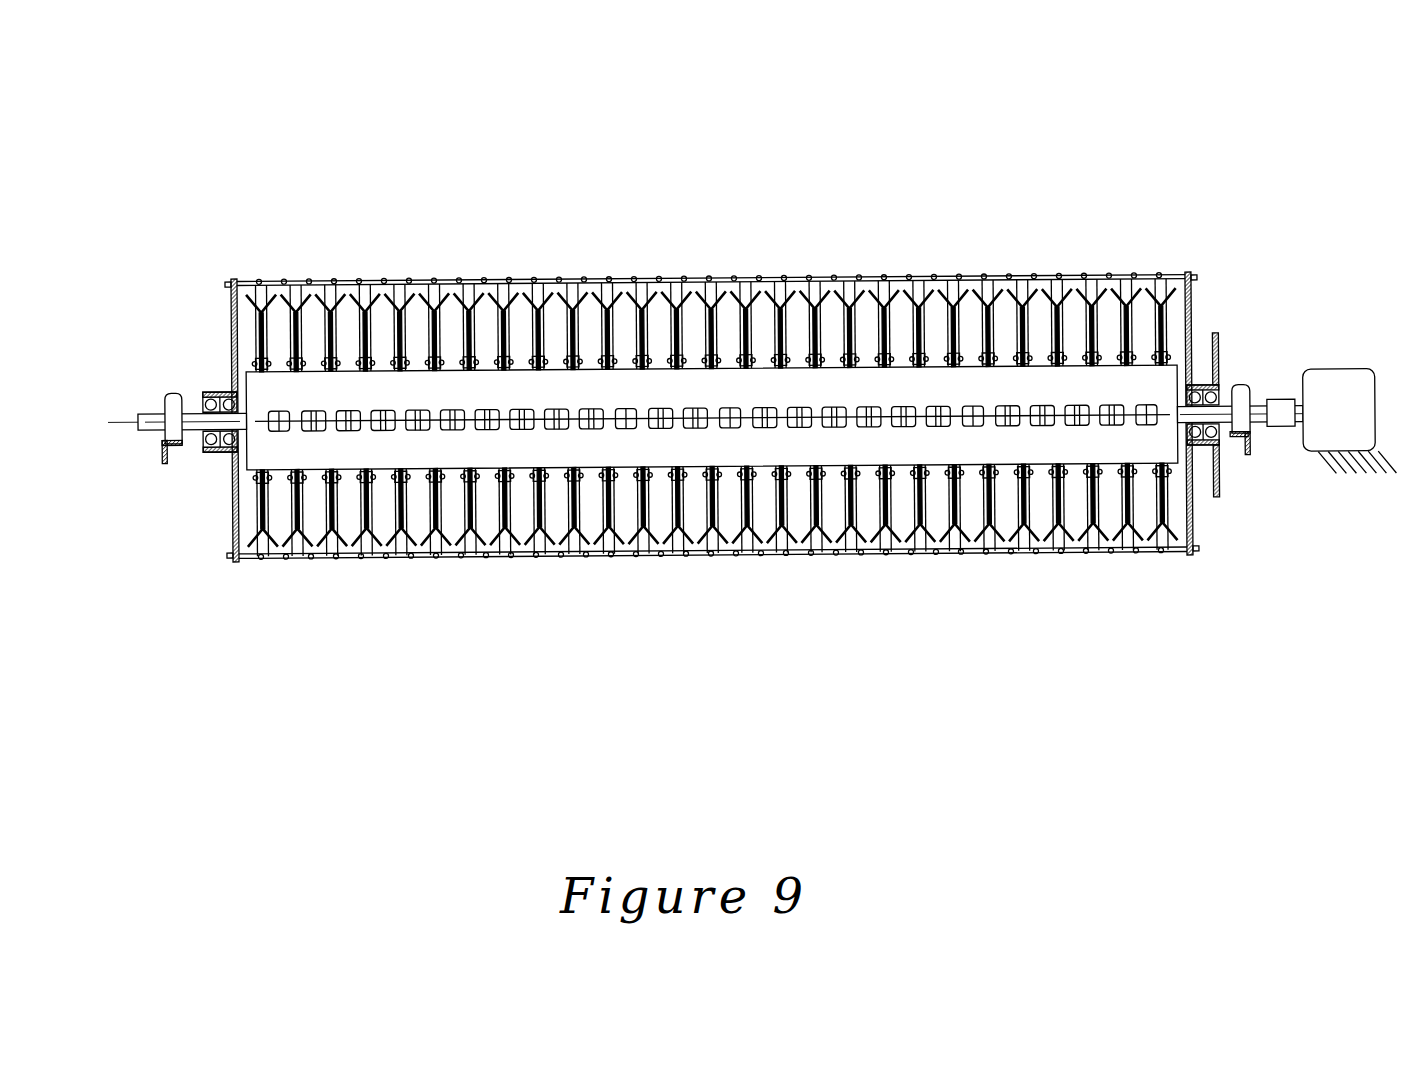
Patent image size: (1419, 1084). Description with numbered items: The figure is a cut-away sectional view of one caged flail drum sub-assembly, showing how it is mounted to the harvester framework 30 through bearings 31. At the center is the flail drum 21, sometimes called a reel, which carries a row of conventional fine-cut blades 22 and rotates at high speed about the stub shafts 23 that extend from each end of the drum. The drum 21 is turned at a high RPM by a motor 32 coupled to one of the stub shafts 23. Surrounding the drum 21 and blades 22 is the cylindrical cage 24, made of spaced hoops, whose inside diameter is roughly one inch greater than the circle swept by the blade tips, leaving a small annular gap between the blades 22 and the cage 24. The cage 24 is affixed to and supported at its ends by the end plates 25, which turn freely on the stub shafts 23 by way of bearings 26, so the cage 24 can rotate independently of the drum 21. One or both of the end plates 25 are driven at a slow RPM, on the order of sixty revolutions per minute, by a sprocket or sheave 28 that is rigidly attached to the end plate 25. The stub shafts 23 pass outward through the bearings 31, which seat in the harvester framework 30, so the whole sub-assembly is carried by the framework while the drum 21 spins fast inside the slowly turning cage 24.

The flail drum 21 is at (270, 455).
The blades 22 is at (448, 540).
The stub shafts 23 is at (147, 430).
The cage 24 is at (623, 277).
The end plates 25 is at (233, 327).
The bearings 26 is at (203, 393).
The sprocket or sheave 28 is at (1223, 345).
The harvester framework 30 is at (165, 453).
The bearings 31 is at (172, 407).
The motor 32 is at (1320, 370).